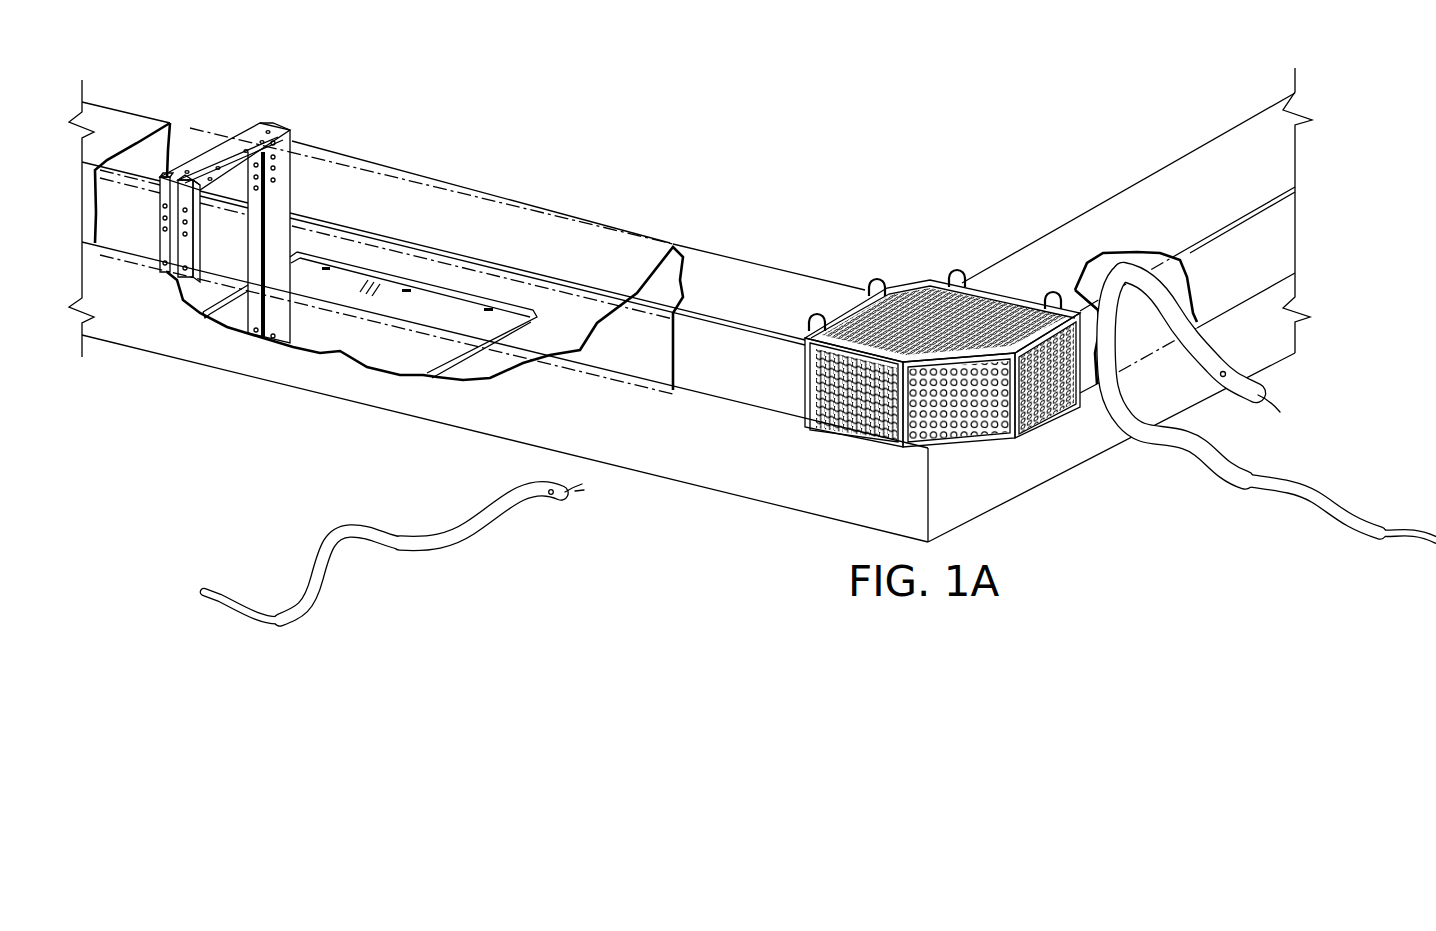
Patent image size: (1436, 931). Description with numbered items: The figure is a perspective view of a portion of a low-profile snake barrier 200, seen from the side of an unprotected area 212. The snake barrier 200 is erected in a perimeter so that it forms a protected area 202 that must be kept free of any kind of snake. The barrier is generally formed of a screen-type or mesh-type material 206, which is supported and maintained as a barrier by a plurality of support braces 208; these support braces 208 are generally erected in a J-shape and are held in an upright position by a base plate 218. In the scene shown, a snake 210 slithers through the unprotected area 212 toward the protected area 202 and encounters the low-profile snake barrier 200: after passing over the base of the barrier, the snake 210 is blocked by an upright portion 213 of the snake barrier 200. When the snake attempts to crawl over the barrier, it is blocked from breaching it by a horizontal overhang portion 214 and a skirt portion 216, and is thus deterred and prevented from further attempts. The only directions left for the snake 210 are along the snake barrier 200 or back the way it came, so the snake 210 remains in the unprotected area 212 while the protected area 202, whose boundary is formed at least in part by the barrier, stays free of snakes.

The low-profile snake barrier 200 is at (765, 534).
The protected area 202 is at (924, 159).
The screen-type or mesh-type material 206 is at (1210, 134).
The support brace 208 is at (304, 132).
The snake 210 is at (437, 548).
The unprotected area 212 is at (365, 494).
The upright portion 213 is at (516, 426).
The horizontal overhang portion 214 is at (1128, 200).
The skirt portion 216 is at (1286, 239).
The base plate 218 is at (433, 308).